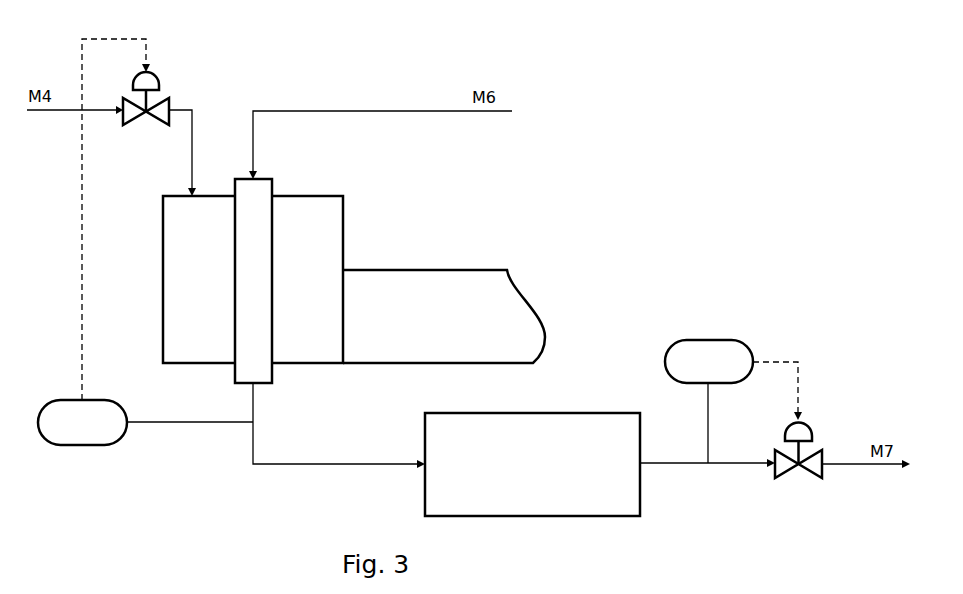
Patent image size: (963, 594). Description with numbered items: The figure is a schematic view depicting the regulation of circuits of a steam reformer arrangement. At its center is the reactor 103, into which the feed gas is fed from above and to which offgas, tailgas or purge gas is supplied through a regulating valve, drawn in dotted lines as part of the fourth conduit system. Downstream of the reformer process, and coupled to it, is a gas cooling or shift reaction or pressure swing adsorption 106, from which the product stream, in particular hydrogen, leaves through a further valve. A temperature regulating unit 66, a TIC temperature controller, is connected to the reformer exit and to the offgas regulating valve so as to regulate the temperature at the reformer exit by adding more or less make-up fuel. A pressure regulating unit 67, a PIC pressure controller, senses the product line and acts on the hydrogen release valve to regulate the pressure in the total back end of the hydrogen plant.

The reactor 103 is at (300, 173).
The gas cooling or shift reaction or pressure swing adsorption 106 is at (515, 473).
The temperature regulating unit 66 is at (70, 434).
The pressure regulating unit 67 is at (697, 373).